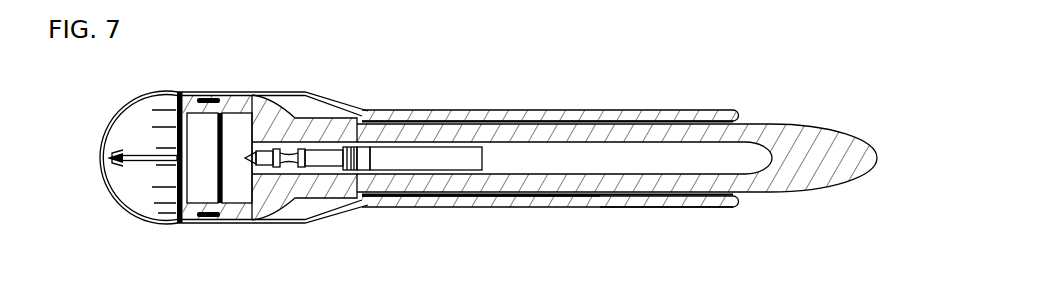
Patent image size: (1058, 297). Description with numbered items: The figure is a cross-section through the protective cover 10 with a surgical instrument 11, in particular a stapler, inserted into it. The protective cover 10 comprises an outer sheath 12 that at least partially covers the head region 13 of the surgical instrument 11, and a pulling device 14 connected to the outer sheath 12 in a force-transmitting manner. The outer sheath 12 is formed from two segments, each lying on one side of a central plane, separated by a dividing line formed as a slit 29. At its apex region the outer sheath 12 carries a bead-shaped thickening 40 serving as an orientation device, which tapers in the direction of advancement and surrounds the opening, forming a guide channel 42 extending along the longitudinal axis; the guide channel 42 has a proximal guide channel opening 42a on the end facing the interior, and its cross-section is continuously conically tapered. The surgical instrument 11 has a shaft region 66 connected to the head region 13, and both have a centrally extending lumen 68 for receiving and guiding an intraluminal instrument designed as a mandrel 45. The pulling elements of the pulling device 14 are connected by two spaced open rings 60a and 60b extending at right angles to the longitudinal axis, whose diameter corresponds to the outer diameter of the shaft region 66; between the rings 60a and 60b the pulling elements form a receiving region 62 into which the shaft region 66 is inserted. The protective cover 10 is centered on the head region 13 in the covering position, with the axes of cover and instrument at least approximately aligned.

The protective cover 10 is at (395, 58).
The surgical instrument 11 is at (753, 137).
The outer sheath 12 is at (153, 98).
The head region 13 is at (295, 116).
The pulling device 14 is at (665, 208).
The slit 29 is at (148, 165).
The thickening 40 is at (110, 170).
The guide channel 42 is at (108, 157).
The proximal guide channel opening 42a is at (135, 140).
The mandrel 45 is at (275, 108).
The open ring 60a is at (385, 203).
The open ring 60b is at (548, 201).
The receiving region 62 is at (465, 203).
The shaft region 66 is at (610, 110).
The lumen 68 is at (507, 157).